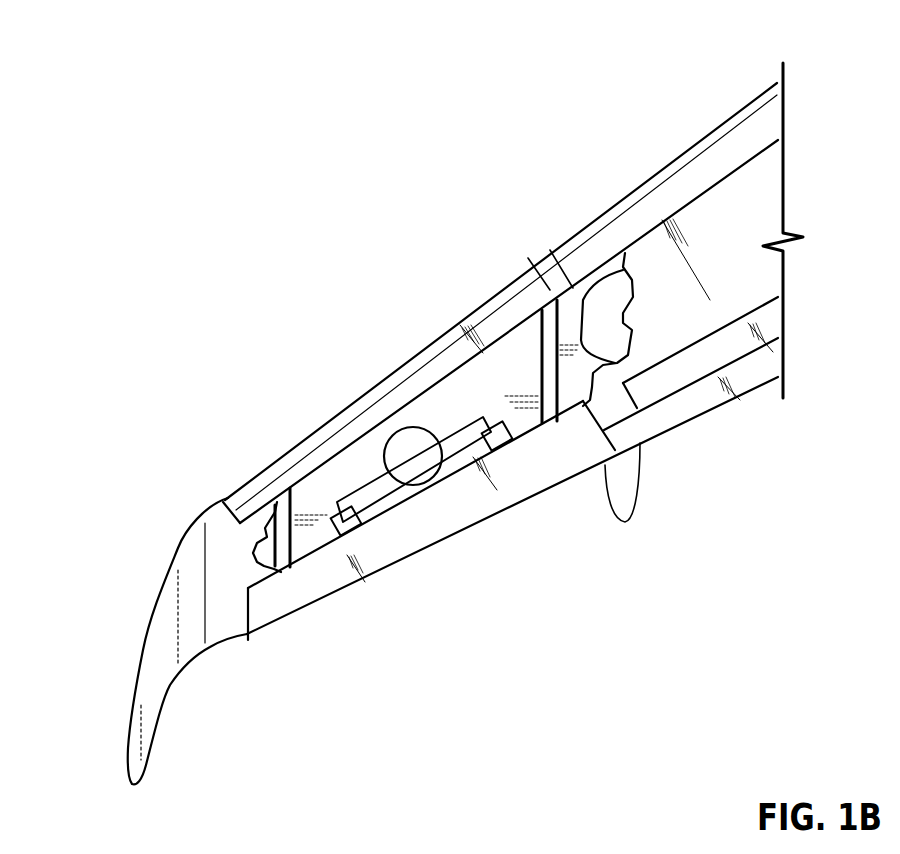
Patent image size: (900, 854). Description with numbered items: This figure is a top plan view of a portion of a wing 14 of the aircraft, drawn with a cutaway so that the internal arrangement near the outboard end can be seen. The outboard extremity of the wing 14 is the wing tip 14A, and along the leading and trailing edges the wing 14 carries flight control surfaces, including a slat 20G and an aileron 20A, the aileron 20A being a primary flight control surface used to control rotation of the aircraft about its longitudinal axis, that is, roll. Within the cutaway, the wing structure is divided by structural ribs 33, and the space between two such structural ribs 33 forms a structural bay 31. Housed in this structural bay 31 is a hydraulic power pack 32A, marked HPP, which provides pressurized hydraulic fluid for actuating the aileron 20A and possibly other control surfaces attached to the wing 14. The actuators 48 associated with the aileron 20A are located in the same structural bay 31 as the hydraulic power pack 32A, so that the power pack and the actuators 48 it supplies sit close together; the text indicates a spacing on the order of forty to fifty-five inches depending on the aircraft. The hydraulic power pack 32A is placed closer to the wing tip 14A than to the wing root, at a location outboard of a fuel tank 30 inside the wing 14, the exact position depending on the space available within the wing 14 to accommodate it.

The wing 14 is at (307, 60).
The wing tip 14A is at (135, 500).
The structural bay 31 is at (427, 410).
The slat 20G is at (590, 252).
The structural rib 33 is at (282, 503).
The fuel tank 30 is at (622, 330).
The aileron 20A is at (580, 457).
The hydraulic power pack 32A is at (433, 481).
The actuator 48 is at (357, 528).